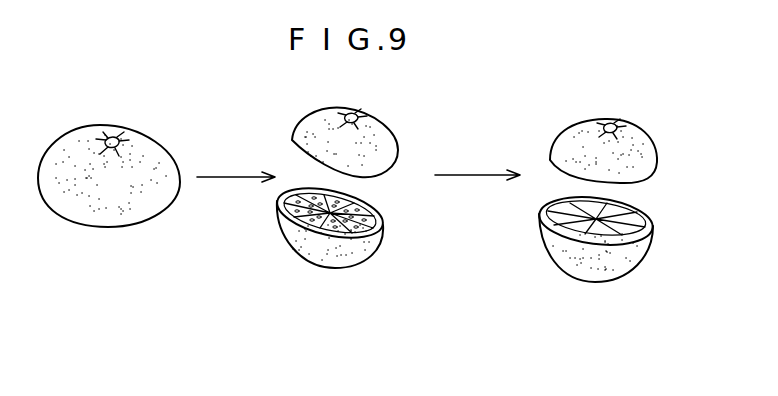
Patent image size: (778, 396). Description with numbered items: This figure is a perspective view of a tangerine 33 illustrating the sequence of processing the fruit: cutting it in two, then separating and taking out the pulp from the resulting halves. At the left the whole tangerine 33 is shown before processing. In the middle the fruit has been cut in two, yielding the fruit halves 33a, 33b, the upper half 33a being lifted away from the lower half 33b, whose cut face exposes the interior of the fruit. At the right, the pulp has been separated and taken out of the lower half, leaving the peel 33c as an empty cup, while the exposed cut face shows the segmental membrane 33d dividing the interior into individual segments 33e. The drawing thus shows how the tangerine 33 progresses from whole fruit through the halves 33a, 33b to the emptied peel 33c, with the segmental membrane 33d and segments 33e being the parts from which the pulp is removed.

The tangerine 33 is at (147, 158).
The fruit half 33a is at (377, 143).
The fruit half 33b is at (353, 254).
The peel 33c is at (585, 268).
The segmental membrane 33d is at (558, 232).
The segment 33e is at (612, 244).